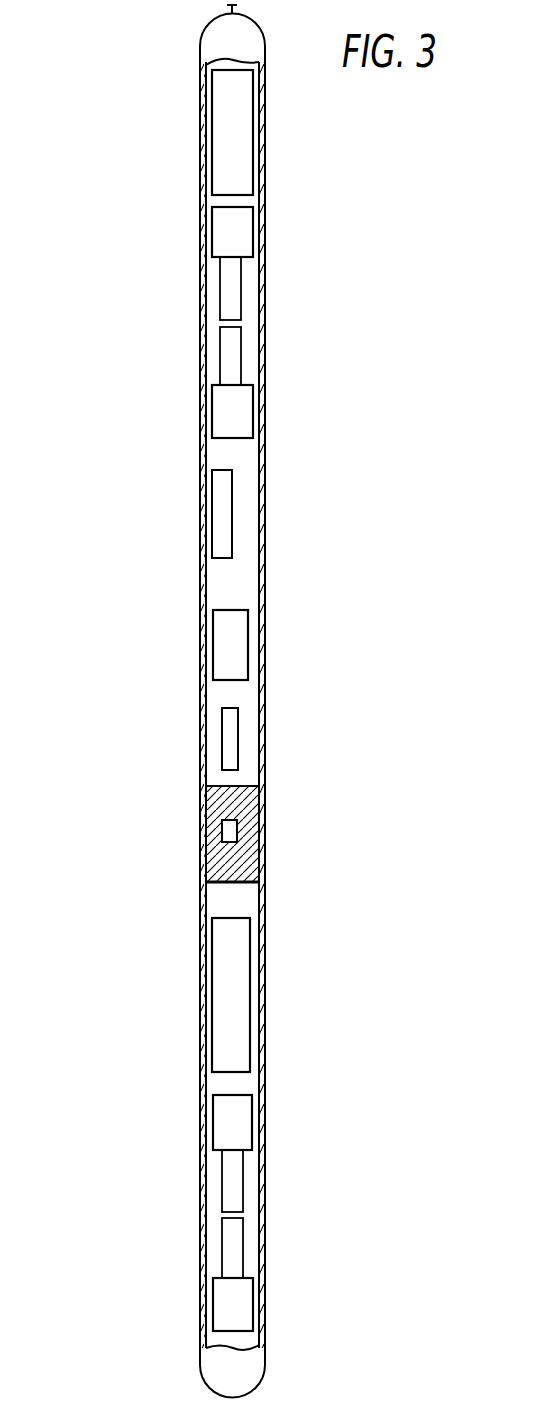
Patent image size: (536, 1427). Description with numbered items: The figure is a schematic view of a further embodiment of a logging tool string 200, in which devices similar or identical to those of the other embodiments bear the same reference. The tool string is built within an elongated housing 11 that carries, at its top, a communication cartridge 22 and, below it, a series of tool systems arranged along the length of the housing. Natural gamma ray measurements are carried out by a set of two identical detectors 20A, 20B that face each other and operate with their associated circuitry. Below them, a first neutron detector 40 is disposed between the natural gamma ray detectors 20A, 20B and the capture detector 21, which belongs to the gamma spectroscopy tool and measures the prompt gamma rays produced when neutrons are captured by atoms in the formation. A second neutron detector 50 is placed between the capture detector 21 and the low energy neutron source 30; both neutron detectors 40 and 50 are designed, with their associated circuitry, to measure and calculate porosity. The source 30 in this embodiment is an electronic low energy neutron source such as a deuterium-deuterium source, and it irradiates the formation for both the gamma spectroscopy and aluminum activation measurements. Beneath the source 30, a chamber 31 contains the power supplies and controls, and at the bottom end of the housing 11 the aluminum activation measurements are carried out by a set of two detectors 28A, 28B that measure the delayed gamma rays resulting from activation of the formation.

The tool string 200 is at (130, 180).
The elongated housing 11 is at (200, 263).
The communication cartridge 22 is at (222, 139).
The natural gamma ray detector 20A is at (248, 228).
The natural gamma ray detector 20B is at (248, 404).
The first neutron detector 40 is at (222, 510).
The first detector 21 is at (240, 633).
The second neutron detector 50 is at (224, 738).
The low energy neutron source 30 is at (233, 825).
The chamber 31 is at (242, 993).
The aluminum activation detector 28A is at (218, 1124).
The aluminum activation detector 28B is at (250, 1300).